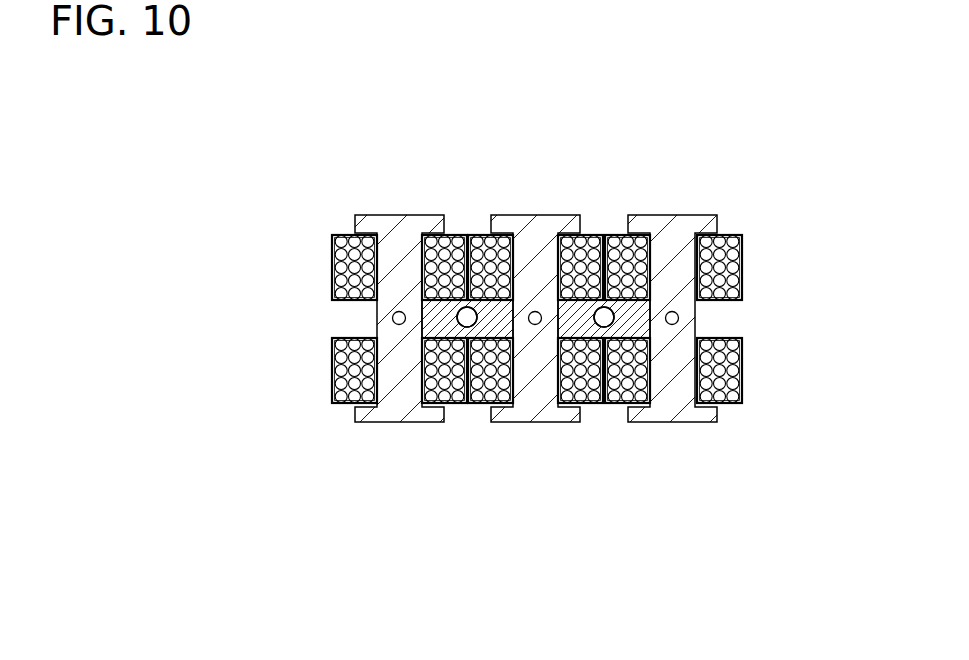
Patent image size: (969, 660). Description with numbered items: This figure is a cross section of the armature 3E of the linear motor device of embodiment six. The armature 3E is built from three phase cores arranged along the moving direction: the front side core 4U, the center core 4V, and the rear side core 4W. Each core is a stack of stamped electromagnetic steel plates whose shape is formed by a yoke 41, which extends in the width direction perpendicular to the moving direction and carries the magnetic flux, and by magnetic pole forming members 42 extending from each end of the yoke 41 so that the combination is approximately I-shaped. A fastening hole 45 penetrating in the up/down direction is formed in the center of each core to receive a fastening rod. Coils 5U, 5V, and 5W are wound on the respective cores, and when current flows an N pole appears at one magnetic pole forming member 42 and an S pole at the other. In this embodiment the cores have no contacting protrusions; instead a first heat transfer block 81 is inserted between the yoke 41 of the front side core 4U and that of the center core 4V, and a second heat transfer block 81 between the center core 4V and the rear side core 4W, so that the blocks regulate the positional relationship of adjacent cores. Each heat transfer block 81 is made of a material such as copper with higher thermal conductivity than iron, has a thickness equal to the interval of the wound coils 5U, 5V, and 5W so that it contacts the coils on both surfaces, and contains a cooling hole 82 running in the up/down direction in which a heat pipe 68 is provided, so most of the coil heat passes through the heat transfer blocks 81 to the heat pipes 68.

The armature 3E is at (767, 196).
The front side core 4U is at (403, 316).
The center core 4V is at (536, 407).
The rear side core 4W is at (675, 407).
The coil 5U is at (343, 368).
The coil 5V is at (483, 405).
The coil 5W is at (620, 403).
The yoke 41 is at (392, 304).
The magnetic pole forming member 42 is at (356, 227).
The fastening hole 45 is at (397, 311).
The heat transfer block 81 is at (558, 303).
The cooling hole 82 is at (466, 307).
The heat pipe 68 is at (535, 317).